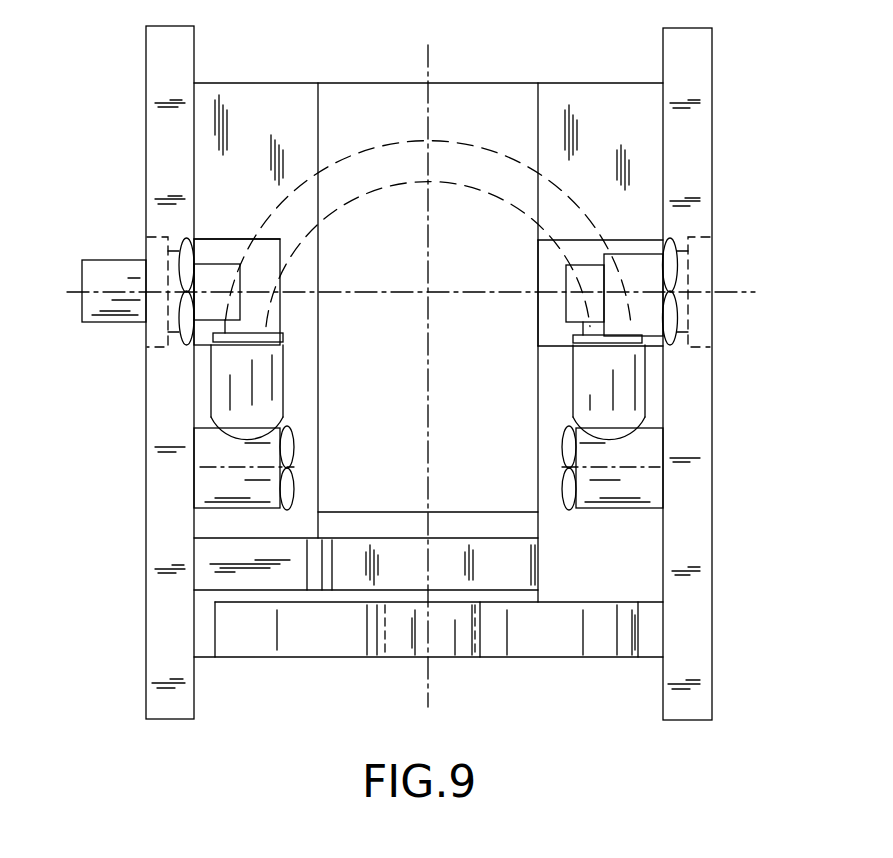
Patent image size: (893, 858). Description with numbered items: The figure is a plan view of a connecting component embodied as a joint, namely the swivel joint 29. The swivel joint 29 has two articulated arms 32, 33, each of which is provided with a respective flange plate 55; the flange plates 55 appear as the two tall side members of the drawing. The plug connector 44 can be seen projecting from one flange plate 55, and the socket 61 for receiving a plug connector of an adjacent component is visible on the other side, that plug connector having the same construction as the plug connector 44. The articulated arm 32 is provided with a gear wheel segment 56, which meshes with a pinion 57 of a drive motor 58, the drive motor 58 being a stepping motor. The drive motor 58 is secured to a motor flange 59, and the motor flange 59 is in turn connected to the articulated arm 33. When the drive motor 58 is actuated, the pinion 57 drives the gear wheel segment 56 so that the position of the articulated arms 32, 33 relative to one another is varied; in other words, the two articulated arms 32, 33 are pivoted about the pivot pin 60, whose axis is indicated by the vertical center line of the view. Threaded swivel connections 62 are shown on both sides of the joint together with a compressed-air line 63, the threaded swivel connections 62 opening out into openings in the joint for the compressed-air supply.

The swivel joint 29 is at (120, 81).
The articulated arm 32 is at (583, 107).
The articulated arm 33 is at (253, 108).
The plug connector 44 is at (108, 318).
The flange plate 55 is at (178, 707).
The gear wheel segment 56 is at (552, 650).
The pinion 57 is at (452, 647).
The drive motor 58 is at (357, 139).
The motor flange 59 is at (292, 570).
The pivot pin 60 is at (428, 82).
The socket 61 is at (690, 315).
The threaded swivel connections 62 is at (243, 477).
The compressed-air line 63 is at (578, 206).